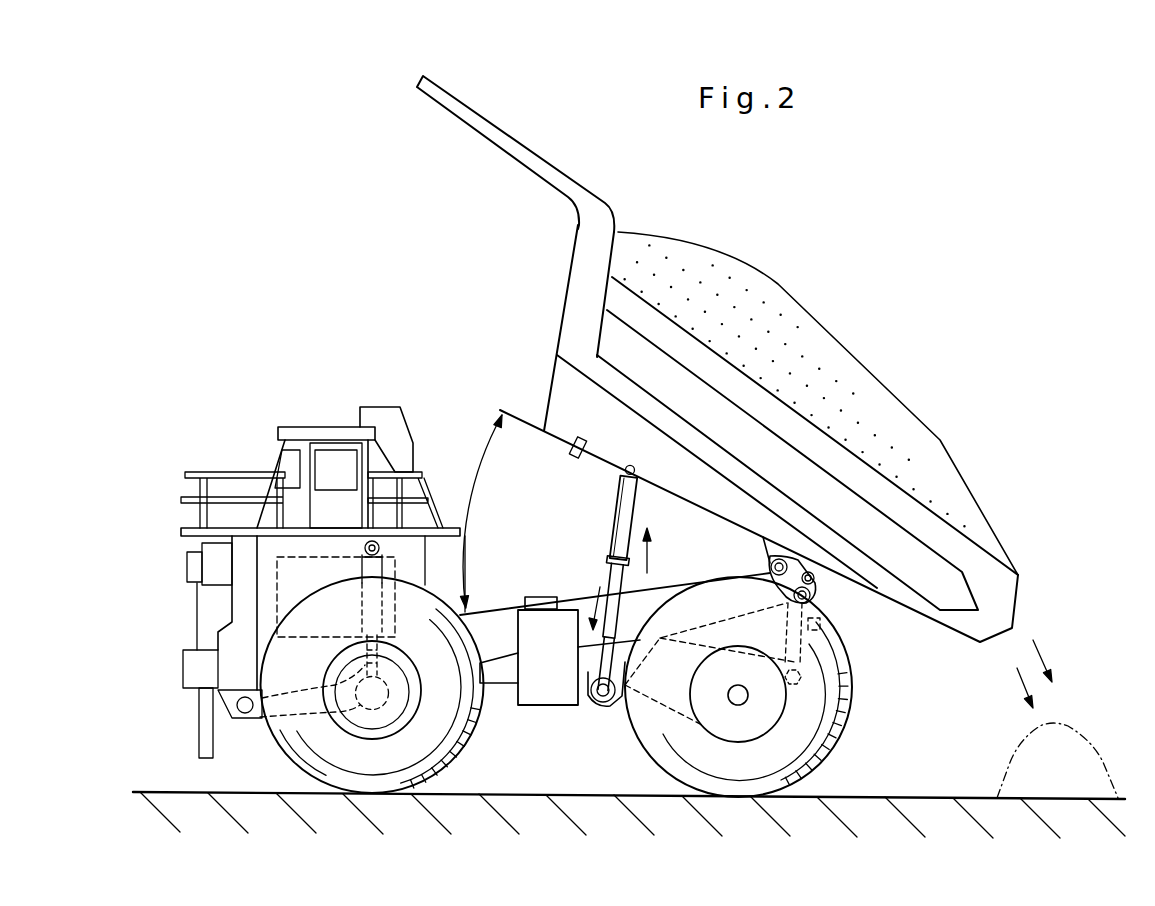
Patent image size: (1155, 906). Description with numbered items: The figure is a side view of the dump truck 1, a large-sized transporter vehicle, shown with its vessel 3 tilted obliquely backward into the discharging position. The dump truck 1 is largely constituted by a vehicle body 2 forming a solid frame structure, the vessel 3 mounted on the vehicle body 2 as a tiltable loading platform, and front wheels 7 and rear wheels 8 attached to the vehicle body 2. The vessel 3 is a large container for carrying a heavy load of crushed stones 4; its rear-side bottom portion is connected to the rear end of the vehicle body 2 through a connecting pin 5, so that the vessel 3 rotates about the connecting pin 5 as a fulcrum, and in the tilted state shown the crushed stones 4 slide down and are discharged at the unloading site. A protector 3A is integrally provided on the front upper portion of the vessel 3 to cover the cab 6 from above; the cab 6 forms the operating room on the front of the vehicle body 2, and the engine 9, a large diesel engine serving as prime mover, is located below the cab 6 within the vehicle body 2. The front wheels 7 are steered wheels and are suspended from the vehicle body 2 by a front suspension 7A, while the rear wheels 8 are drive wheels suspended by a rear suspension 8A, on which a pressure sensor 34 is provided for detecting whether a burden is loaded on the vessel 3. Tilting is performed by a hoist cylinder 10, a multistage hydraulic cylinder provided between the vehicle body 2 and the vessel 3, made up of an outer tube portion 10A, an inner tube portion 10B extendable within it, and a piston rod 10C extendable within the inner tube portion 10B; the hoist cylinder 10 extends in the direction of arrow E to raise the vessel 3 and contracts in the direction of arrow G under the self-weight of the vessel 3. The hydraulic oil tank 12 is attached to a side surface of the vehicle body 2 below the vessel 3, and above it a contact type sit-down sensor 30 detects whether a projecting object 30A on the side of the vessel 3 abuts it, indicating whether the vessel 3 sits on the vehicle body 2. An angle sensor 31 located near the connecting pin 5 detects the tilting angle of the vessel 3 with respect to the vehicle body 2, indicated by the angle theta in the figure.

The dump truck 1 is at (357, 403).
The vehicle body 2 is at (498, 647).
The vessel 3 is at (902, 510).
The protector 3A is at (497, 140).
The crushed stones 4 is at (783, 295).
The connecting pin 5 is at (763, 553).
The cab 6 is at (283, 442).
The front wheels 7 is at (288, 745).
The front suspension 7A is at (375, 570).
The rear wheels 8 is at (823, 738).
The rear suspension 8A is at (840, 673).
The engine 9 is at (277, 592).
The hoist cylinder 10 is at (612, 520).
The outer tube portion 10A is at (625, 518).
The inner tube portion 10B is at (600, 568).
The piston rod 10C is at (588, 697).
The hydraulic oil tank 12 is at (538, 697).
The sit-down sensor 30 is at (532, 597).
The projecting object 30A is at (568, 442).
The angle sensor 31 is at (817, 583).
The pressure sensor 34 is at (833, 630).